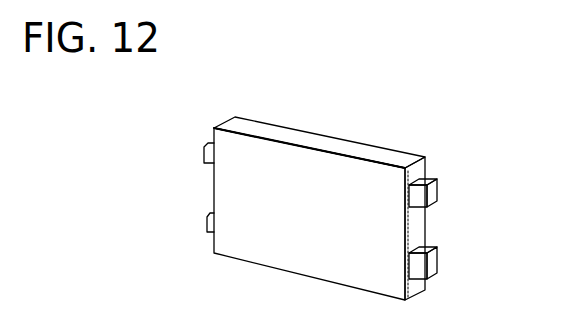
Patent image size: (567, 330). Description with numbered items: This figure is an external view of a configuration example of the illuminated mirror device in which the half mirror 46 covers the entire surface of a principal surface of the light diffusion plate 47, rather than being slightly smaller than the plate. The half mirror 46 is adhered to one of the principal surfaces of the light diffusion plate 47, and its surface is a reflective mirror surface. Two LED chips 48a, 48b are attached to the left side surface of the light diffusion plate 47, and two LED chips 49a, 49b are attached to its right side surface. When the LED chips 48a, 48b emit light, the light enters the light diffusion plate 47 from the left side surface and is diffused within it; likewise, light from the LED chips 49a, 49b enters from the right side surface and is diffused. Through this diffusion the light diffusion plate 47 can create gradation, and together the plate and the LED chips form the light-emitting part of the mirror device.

The half mirror 46 is at (283, 243).
The light diffusion plate 47 is at (328, 142).
The LED chip 48a is at (207, 147).
The LED chip 48b is at (210, 232).
The LED chip 49a is at (421, 179).
The LED chip 49b is at (422, 268).